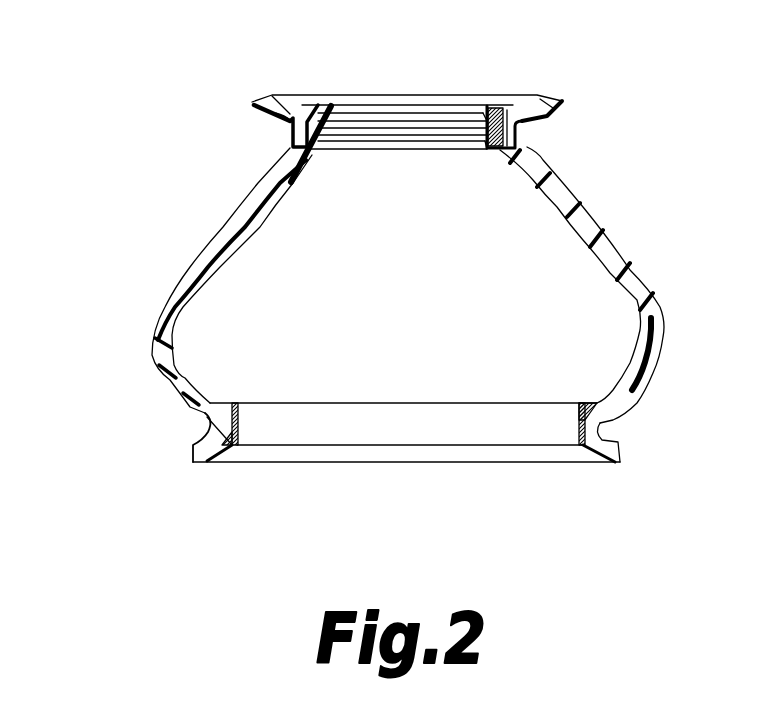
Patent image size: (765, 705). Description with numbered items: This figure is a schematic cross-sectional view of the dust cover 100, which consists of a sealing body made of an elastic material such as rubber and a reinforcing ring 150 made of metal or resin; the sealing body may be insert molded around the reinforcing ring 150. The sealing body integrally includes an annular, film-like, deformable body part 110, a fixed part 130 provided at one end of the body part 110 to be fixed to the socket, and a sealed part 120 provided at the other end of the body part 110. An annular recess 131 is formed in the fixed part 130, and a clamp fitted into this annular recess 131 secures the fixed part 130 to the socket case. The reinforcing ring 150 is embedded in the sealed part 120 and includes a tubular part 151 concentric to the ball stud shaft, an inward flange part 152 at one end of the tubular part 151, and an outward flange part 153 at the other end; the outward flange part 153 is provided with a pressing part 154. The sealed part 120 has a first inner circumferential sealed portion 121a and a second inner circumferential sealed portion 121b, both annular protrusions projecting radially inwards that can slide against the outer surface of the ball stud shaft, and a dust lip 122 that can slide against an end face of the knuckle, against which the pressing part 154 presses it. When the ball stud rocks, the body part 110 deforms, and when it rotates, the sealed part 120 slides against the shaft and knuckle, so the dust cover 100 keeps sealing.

The dust cover 100 is at (118, 125).
The body part 110 is at (617, 237).
The sealed part 120 is at (592, 103).
The first inner circumferential sealed portion 121a is at (468, 95).
The second inner circumferential sealed portion 121b is at (470, 140).
The dust lip 122 is at (556, 96).
The fixed part 130 is at (618, 442).
The annular recess 131 is at (207, 458).
The reinforcing ring 150 is at (491, 166).
The tubular part 151 is at (288, 142).
The inward flange part 152 is at (322, 158).
The outward flange part 153 is at (298, 95).
The pressing part 154 is at (258, 118).